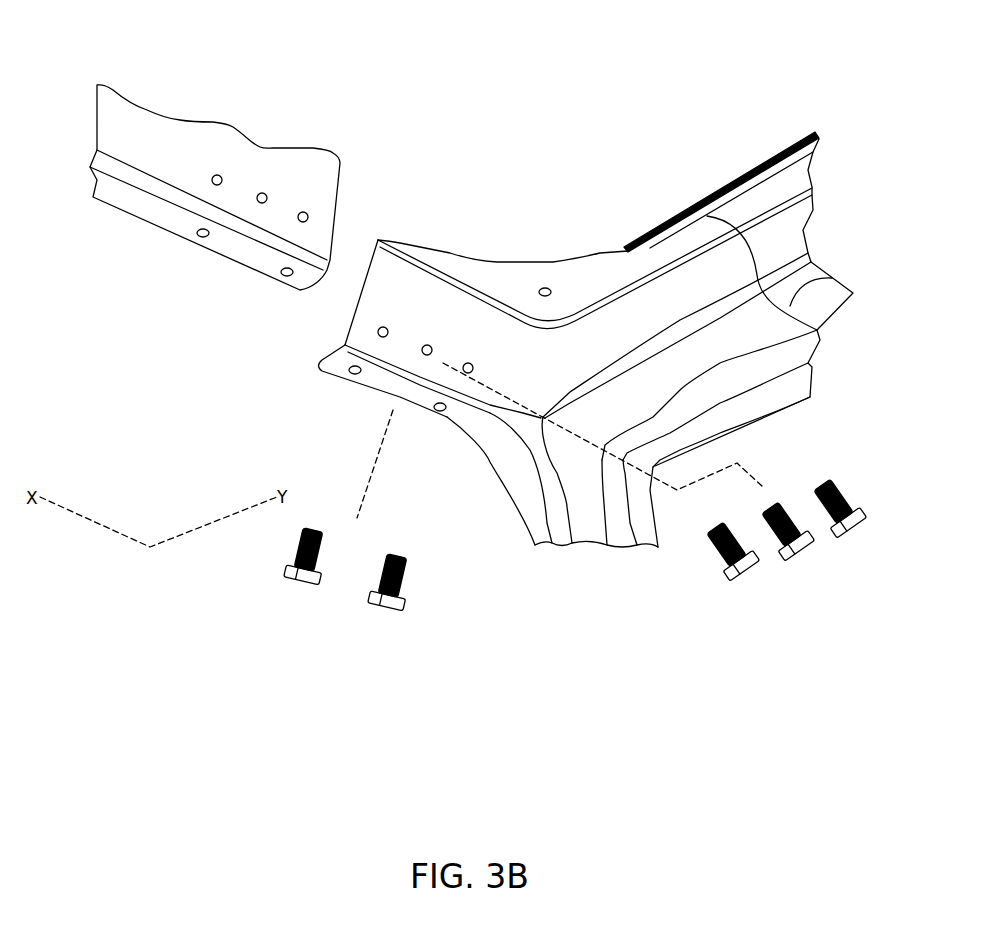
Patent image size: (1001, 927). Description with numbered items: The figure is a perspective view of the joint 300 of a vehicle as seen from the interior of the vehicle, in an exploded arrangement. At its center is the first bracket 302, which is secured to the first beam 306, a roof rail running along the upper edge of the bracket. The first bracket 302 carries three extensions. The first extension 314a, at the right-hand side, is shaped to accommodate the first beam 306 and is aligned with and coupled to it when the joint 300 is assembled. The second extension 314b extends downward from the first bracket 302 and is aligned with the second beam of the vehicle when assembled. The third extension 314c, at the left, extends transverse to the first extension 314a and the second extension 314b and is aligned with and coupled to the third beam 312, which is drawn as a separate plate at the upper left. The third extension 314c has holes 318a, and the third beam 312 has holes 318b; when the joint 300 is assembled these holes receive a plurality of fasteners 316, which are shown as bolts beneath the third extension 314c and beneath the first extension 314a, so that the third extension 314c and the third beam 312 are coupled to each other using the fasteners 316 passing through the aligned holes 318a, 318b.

The joint 300 is at (545, 60).
The first bracket 302 is at (497, 260).
The first beam 306 is at (790, 147).
The third beam 312 is at (270, 148).
The first extension 314a is at (828, 280).
The second extension 314b is at (620, 543).
The third extension 314c is at (317, 368).
The fasteners 316 is at (386, 610).
The holes 318a is at (298, 221).
The holes 318b is at (463, 372).